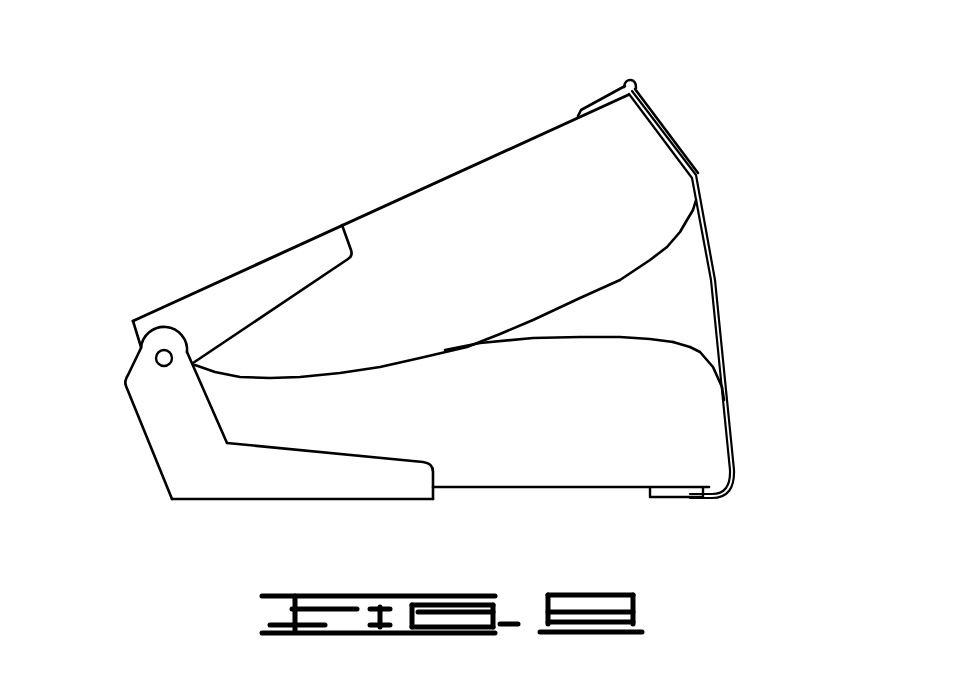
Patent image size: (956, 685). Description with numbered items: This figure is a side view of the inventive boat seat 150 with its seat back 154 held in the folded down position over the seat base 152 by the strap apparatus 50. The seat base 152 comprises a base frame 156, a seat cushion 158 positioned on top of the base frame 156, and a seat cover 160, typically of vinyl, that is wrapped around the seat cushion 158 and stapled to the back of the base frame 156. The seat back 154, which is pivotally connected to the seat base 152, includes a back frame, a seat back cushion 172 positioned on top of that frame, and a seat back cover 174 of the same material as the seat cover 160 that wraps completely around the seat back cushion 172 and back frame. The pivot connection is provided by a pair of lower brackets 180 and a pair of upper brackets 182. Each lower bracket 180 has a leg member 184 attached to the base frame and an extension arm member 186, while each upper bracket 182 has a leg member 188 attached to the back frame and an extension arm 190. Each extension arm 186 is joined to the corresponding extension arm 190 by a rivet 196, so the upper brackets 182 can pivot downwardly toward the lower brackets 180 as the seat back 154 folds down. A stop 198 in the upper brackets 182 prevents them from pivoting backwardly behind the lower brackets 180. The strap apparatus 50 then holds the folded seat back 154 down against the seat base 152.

The boat seat 150 is at (200, 66).
The seat back 154 is at (457, 200).
The seat back cushion 172 is at (515, 175).
The strap apparatus 50 is at (715, 288).
The leg member 188 is at (313, 259).
The upper bracket 182 is at (250, 287).
The seat back cover 174 is at (402, 200).
The seat cover 160 is at (677, 343).
The seat cushion 158 is at (702, 397).
The seat base 152 is at (682, 460).
The base frame 156 is at (598, 492).
The stop 198 is at (132, 330).
The extension arm 190 is at (150, 322).
The rivet 196 is at (147, 358).
The extension arm member 186 is at (163, 442).
The lower bracket 180 is at (220, 478).
The leg member 184 is at (328, 483).